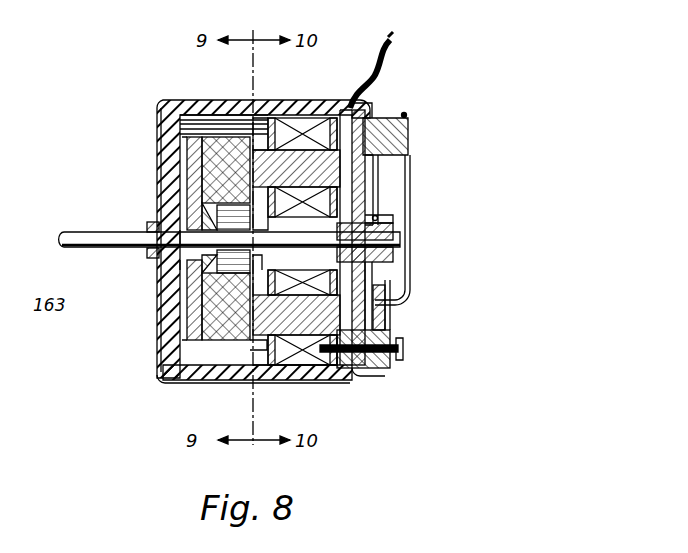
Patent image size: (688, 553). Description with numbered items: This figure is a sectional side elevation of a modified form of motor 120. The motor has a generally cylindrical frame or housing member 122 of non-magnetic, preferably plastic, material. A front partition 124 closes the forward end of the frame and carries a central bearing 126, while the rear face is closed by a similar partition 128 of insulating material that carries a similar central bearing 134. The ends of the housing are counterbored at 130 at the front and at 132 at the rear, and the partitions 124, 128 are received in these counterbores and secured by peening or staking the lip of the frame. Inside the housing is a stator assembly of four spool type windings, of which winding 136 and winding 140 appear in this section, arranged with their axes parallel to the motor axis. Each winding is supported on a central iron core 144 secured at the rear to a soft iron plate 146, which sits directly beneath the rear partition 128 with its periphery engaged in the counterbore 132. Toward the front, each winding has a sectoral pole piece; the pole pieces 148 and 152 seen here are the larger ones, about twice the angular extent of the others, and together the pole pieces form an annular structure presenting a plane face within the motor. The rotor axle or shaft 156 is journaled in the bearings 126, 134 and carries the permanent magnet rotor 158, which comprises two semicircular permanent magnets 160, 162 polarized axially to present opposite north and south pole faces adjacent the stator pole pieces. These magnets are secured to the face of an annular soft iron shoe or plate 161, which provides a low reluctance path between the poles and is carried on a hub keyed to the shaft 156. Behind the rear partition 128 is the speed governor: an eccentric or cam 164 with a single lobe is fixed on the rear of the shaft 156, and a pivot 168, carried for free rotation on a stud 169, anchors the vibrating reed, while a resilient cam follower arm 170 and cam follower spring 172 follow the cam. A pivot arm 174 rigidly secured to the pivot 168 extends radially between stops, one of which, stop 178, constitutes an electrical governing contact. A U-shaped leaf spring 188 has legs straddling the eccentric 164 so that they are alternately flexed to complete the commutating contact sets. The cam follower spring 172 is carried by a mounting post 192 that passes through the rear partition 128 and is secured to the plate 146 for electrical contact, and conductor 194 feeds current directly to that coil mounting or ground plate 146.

The motor 120 is at (205, 104).
The frame or housing member 122 is at (238, 102).
The front partition 124 is at (160, 160).
The bearing 126 is at (152, 224).
The rear partition 128 is at (385, 180).
The counterbore 130 is at (165, 106).
The counterbore 132 is at (330, 108).
The bearing 134 is at (372, 222).
The spool type winding 136 is at (285, 110).
The spool type winding 140 is at (286, 380).
The central iron core 144 is at (312, 175).
The plate 146 is at (395, 262).
The pole piece 148 is at (258, 195).
The pole piece 152 is at (262, 346).
The rotor axle or shaft 156 is at (125, 248).
The permanent magnet rotor 158 is at (186, 330).
The permanent magnet 160 is at (238, 172).
The annular shoe or plate 161 is at (178, 295).
The permanent magnet 162 is at (238, 307).
The eccentric or cam 164 is at (392, 236).
The pivot 168 is at (375, 370).
The stud 169 is at (400, 345).
The resilient cam follower arm 170 is at (388, 302).
The cam follower spring 172 is at (405, 186).
The pivot arm 174 is at (392, 318).
The stop or abutment 178 is at (405, 298).
The U-shaped leaf spring 188 is at (395, 231).
The mounting post 192 is at (390, 122).
The conductor 194 is at (385, 58).